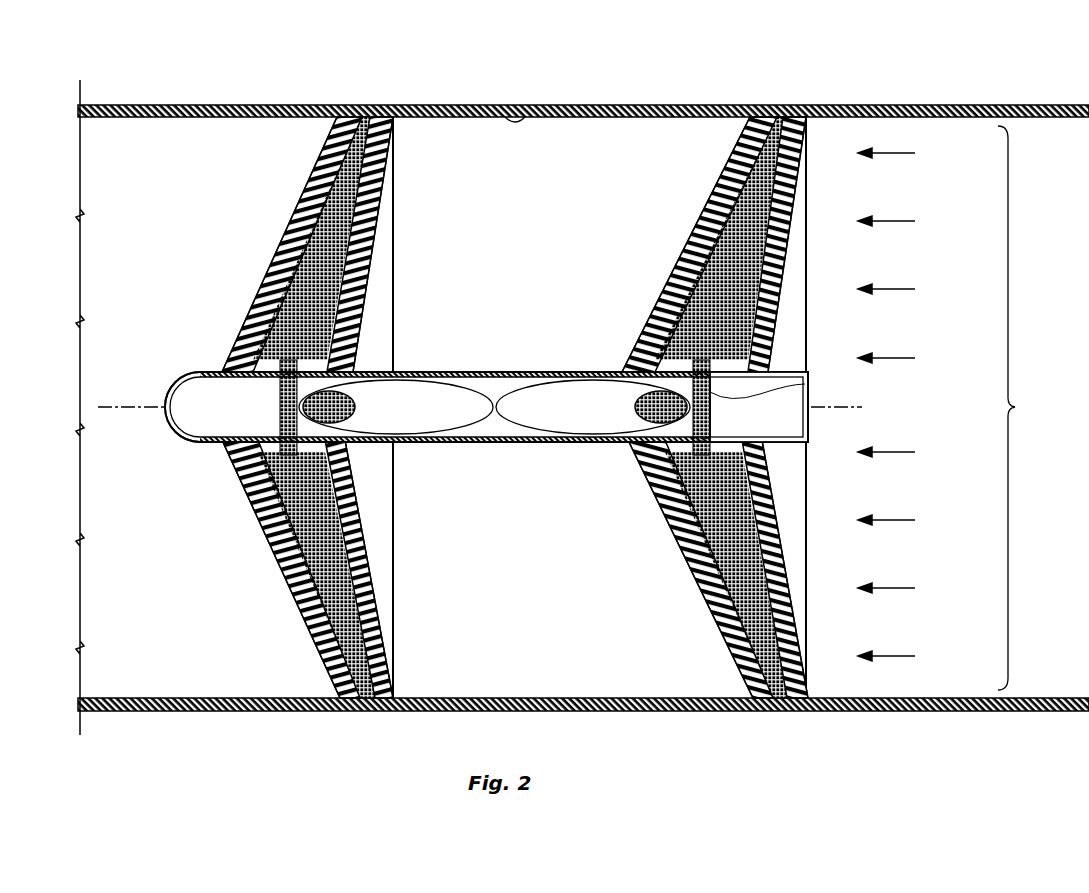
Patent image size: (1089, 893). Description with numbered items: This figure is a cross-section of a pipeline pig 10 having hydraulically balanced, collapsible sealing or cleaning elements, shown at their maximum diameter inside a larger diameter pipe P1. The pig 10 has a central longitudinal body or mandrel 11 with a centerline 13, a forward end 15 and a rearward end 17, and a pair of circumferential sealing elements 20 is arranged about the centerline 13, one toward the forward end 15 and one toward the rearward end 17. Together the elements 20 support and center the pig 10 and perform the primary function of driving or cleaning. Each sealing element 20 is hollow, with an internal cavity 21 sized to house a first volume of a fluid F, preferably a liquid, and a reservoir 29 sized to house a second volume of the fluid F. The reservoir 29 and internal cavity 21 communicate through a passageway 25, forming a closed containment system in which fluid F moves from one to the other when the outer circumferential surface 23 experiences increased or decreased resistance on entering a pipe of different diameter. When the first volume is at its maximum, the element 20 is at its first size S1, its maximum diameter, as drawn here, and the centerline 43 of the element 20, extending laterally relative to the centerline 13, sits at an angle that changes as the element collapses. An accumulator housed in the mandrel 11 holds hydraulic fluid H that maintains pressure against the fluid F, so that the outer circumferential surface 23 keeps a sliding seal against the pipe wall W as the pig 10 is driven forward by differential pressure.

The pipeline pig 10 is at (499, 367).
The central longitudinal body or mandrel 11 is at (193, 372).
The centerline 13 is at (145, 412).
The forward end 15 is at (165, 420).
The rearward end 17 is at (810, 442).
The collapsible and expandable sealing or cleaning element 20 is at (511, 407).
The internal cavity 21 is at (320, 255).
The outer circumferential surface 23 is at (777, 116).
The passageway 25 is at (806, 381).
The reservoir 29 is at (340, 422).
The centerline of the sealing element 43 is at (785, 105).
The pipe wall W is at (501, 106).
The hydraulic fluid or liquid H is at (581, 441).
The fluid F is at (760, 290).
The larger diameter pipe P1 is at (1024, 103).
The first size S1 is at (963, 408).